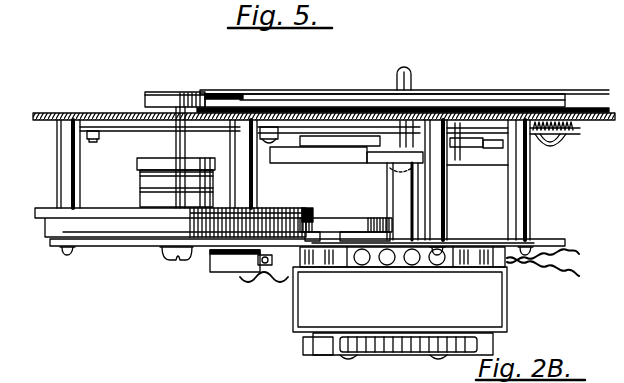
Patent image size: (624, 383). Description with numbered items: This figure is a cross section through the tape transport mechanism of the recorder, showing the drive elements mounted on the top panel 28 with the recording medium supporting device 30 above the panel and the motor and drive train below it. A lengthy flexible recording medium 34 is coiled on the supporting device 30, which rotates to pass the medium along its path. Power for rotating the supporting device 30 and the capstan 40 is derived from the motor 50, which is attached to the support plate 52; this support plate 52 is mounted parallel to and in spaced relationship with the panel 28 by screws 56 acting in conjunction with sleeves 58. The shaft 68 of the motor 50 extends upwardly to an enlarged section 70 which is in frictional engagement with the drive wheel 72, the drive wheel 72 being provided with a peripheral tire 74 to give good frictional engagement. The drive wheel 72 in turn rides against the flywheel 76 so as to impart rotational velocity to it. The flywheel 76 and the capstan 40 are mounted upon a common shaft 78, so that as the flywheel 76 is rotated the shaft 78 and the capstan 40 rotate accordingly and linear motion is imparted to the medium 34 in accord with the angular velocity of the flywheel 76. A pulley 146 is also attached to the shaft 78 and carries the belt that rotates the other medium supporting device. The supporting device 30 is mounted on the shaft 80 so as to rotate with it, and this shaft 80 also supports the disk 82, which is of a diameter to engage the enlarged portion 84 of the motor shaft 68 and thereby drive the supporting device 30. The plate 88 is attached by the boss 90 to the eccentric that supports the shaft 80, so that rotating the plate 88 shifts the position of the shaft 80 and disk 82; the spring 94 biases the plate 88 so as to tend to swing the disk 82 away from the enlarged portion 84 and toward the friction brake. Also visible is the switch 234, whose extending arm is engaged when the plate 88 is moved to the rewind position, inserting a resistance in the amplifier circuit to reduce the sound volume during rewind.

The top panel 28 is at (105, 113).
The medium supporting device 30 is at (344, 90).
The flexible recording medium 34 is at (146, 100).
The capstan 40 is at (181, 92).
The motor 50 is at (370, 318).
The support plate 52 is at (497, 243).
The screws 56 is at (66, 257).
The sleeves 58 is at (58, 173).
The shaft 68 is at (392, 264).
The enlarged section 70 is at (388, 190).
The drive wheel 72 is at (335, 217).
The peripheral tire 74 is at (343, 225).
The flywheel 76 is at (107, 215).
The common shaft 78 is at (173, 142).
The shaft 80 is at (412, 80).
The disk 82 is at (313, 158).
The enlarged portion 84 is at (372, 158).
The plate 88 is at (304, 128).
The boss 90 is at (387, 124).
The spring 94 is at (560, 138).
The pulley 146 is at (205, 153).
The switch 234 is at (211, 268).